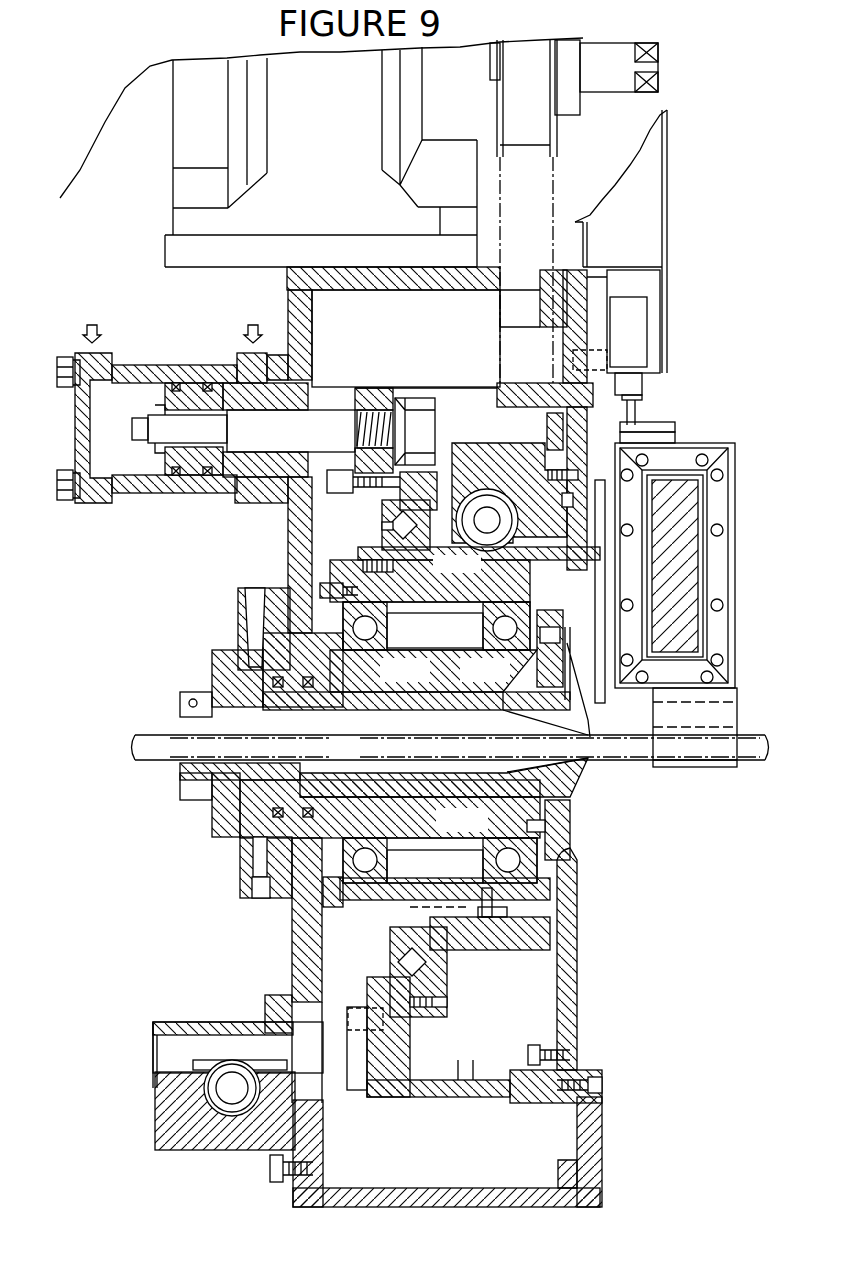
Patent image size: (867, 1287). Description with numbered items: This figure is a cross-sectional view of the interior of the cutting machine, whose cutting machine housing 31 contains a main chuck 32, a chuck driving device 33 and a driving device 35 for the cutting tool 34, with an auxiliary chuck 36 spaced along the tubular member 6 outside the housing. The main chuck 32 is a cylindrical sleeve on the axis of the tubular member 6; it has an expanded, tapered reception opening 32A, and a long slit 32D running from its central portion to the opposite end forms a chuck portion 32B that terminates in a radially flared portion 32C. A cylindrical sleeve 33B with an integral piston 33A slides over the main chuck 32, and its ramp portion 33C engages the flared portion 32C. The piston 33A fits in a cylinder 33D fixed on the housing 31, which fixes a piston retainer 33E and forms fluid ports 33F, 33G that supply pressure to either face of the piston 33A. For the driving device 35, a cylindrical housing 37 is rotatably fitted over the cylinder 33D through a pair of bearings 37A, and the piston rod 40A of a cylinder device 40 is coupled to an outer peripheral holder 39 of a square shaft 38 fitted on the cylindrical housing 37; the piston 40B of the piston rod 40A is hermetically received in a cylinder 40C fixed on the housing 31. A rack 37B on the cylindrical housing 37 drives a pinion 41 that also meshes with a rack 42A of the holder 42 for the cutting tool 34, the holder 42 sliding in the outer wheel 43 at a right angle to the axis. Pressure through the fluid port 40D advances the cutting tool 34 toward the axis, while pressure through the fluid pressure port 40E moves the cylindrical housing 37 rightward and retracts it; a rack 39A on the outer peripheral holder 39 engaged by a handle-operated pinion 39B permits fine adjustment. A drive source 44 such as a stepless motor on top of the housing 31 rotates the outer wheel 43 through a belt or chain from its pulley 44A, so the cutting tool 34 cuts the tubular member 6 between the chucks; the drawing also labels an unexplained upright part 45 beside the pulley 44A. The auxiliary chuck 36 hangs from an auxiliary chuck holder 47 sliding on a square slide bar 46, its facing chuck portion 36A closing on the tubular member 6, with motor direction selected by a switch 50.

The tubular member 6 is at (162, 745).
The cutting machine housing 31 is at (307, 967).
The main chuck 32 is at (225, 790).
The reception opening 32A is at (180, 768).
The chuck portion 32B is at (588, 742).
The radially flared portion 32C is at (575, 823).
The long slit 32D is at (547, 640).
The chuck driving device 33 is at (235, 628).
The piston 33A is at (222, 832).
The cylindrical sleeve 33B is at (480, 788).
The ramp portion 33C is at (570, 792).
The cylinder 33D is at (410, 818).
The piston retainer 33E is at (228, 675).
The fluid port 33F is at (257, 628).
The fluid port 33G is at (258, 890).
The cutting tool 34 is at (590, 690).
The driving device 35 is at (330, 508).
The auxiliary chuck 36 is at (718, 768).
The chuck portion 36A is at (730, 727).
The cylindrical housing 37 is at (432, 590).
The bearings 37A is at (368, 647).
The rack 37B is at (460, 574).
The square shaft 38 is at (388, 518).
The outer peripheral holder 39 is at (378, 402).
The rack 39A is at (218, 1053).
The pinion 39B is at (232, 1088).
The cylinder device 40 is at (173, 360).
The piston rod 40A is at (332, 422).
The piston 40B is at (193, 460).
The cylinder 40C is at (93, 483).
The fluid port 40D is at (253, 362).
The fluid pressure port 40E is at (98, 363).
The pinion 41 is at (477, 490).
The holder 42 is at (590, 457).
The rack 42A is at (503, 473).
The outer wheel 43 is at (508, 928).
The drive source 44 is at (448, 86).
The pulley 44A is at (528, 113).
The column 45 is at (555, 253).
The slide bar 46 is at (675, 575).
The auxiliary chuck holder 47 is at (715, 508).
The switch 50 is at (643, 386).